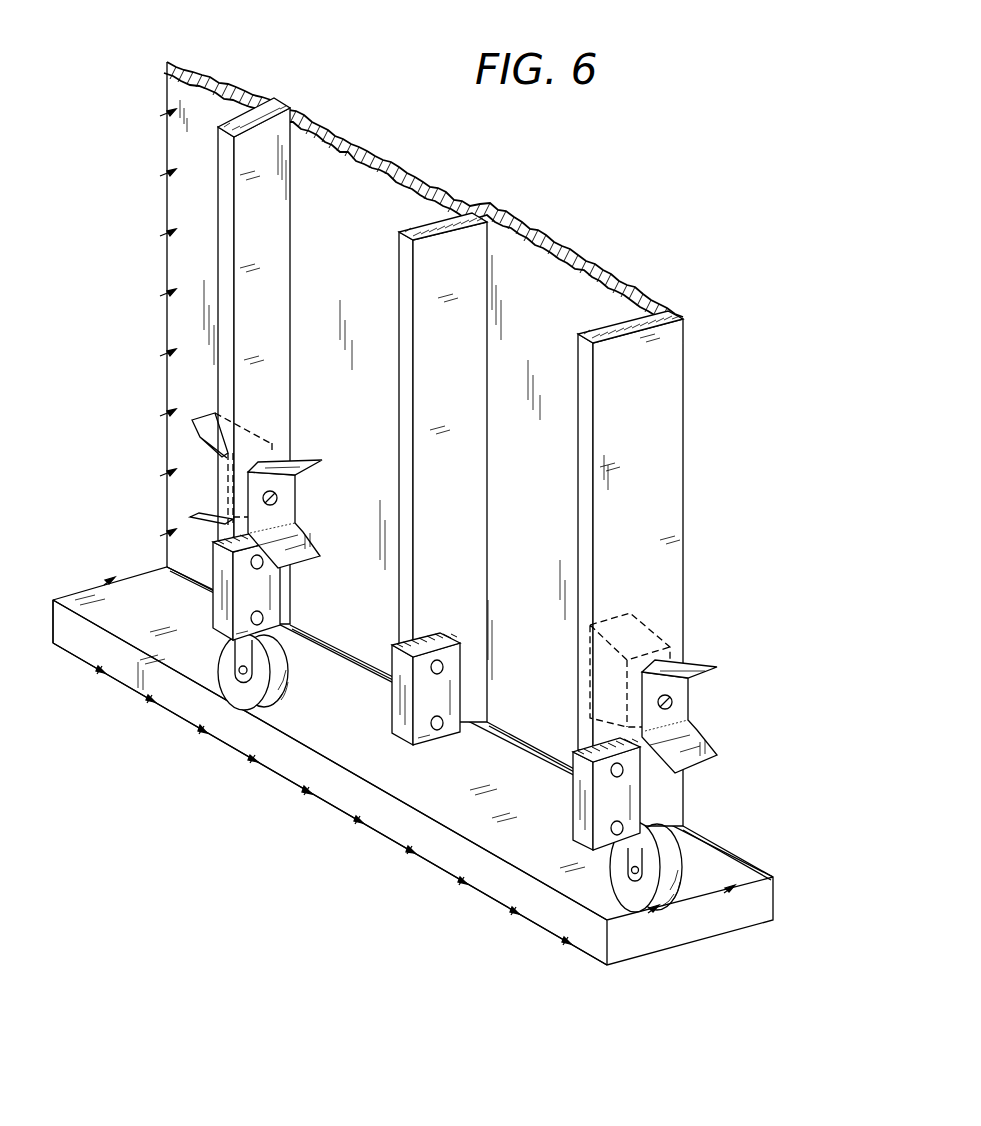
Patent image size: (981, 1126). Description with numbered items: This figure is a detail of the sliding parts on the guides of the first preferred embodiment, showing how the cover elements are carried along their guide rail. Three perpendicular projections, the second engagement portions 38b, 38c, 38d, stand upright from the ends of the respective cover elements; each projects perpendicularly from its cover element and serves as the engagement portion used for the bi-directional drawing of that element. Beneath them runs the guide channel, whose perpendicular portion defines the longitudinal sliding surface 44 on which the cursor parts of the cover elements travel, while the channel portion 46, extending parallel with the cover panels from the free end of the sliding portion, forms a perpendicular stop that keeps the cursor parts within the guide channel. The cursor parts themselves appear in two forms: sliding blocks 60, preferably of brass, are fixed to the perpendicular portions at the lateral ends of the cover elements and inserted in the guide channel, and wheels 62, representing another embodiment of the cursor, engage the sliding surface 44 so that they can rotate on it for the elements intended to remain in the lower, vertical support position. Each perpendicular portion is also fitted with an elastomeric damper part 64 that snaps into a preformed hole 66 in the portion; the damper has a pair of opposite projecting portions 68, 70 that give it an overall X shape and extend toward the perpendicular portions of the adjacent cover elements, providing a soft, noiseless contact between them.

The second engagement portion 38b is at (580, 737).
The second engagement portion 38c is at (432, 603).
The second engagement portion 38d is at (222, 530).
The longitudinal sliding surface 44 is at (468, 760).
The guide channel portion 46 is at (372, 793).
The sliding block 60 is at (226, 607).
The wheel 62 is at (260, 687).
The elastomeric damper part 64 is at (695, 667).
The preformed hole 66 is at (672, 702).
The projecting portion 68 is at (700, 655).
The projecting portion 70 is at (652, 620).